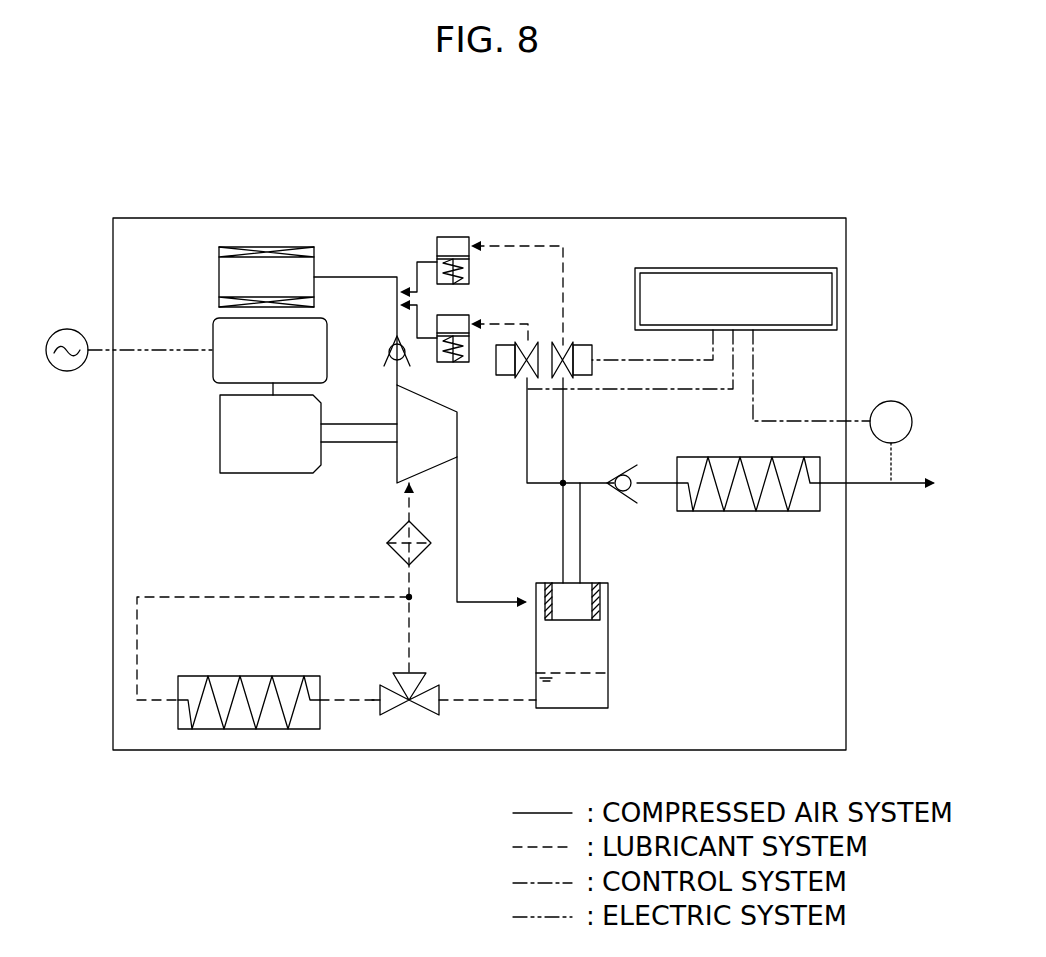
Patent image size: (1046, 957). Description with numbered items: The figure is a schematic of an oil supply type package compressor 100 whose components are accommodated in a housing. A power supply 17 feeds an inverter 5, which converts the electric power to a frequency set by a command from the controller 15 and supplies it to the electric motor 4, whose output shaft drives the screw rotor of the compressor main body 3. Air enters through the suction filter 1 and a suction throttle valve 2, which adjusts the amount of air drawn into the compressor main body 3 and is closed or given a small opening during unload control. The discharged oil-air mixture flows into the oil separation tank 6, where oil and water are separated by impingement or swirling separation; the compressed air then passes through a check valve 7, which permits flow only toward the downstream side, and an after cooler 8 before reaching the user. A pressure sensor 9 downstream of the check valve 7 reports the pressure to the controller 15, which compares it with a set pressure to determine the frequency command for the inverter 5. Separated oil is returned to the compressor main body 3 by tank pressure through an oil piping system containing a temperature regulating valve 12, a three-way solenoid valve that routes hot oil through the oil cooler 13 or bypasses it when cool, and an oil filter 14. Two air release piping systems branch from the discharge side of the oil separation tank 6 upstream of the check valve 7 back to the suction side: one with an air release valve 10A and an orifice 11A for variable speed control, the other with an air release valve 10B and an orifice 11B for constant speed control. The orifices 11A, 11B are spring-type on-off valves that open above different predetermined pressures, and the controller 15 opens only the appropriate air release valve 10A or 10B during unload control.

The compressor 100 is at (625, 218).
The suction filter 1 is at (219, 270).
The suction throttle valve 2 is at (384, 348).
The compressor main body 3 is at (450, 432).
The electric motor 4 is at (220, 447).
The inverter 5 is at (213, 375).
The oil separation tank 6 is at (608, 635).
The check valve 7 is at (632, 468).
The after cooler 8 is at (718, 457).
The pressure sensor 9 is at (899, 402).
The air release valve 10A is at (578, 344).
The air release valve 10B is at (506, 343).
The orifice (pressure regulating valve) 11A is at (430, 237).
The orifice (pressure regulating valve) 11B is at (475, 362).
The temperature regulating valve 12 is at (414, 674).
The oil cooler 13 is at (229, 675).
The oil filter 14 is at (394, 534).
The controller 15 is at (656, 268).
The power supply 17 is at (65, 329).